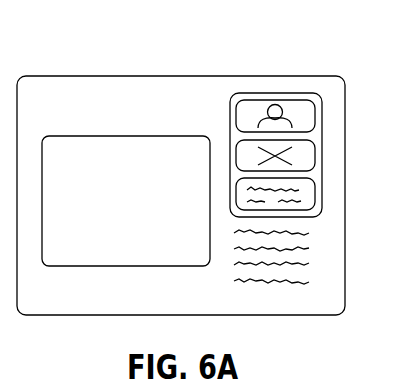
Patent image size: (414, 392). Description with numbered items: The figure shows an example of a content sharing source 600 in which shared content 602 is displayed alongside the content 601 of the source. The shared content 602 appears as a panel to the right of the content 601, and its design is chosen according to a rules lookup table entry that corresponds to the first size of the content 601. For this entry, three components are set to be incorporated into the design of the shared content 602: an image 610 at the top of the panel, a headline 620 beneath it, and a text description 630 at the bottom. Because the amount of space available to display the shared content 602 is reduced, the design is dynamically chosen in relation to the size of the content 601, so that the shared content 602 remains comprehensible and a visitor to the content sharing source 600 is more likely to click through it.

The user interface display 600 is at (107, 76).
The content 601 is at (92, 136).
The shared content 602 is at (275, 93).
The image 610 is at (322, 116).
The headline 620 is at (322, 156).
The text description 630 is at (322, 195).